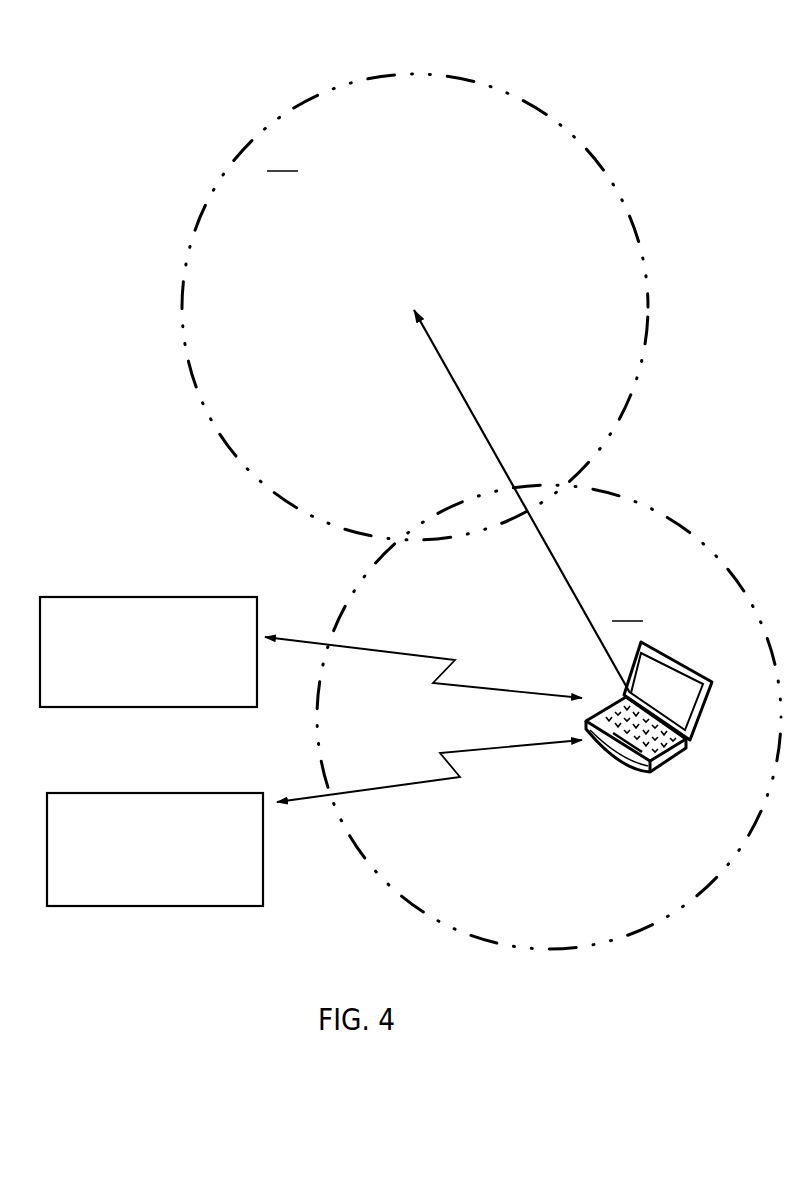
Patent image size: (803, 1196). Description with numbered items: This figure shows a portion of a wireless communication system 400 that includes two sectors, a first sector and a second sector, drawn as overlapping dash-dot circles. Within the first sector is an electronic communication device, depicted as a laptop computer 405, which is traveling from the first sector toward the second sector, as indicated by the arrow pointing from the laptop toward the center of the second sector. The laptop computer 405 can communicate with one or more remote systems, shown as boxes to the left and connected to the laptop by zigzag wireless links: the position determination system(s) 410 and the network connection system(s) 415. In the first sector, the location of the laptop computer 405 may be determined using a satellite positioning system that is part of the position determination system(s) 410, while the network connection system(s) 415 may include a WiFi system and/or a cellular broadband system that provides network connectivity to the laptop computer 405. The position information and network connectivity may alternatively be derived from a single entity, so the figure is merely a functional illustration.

The wireless communication system 400 is at (481, 484).
The laptop computer 405 is at (611, 763).
The position determination system(s) 410 is at (158, 710).
The network connection system(s) 415 is at (155, 907).